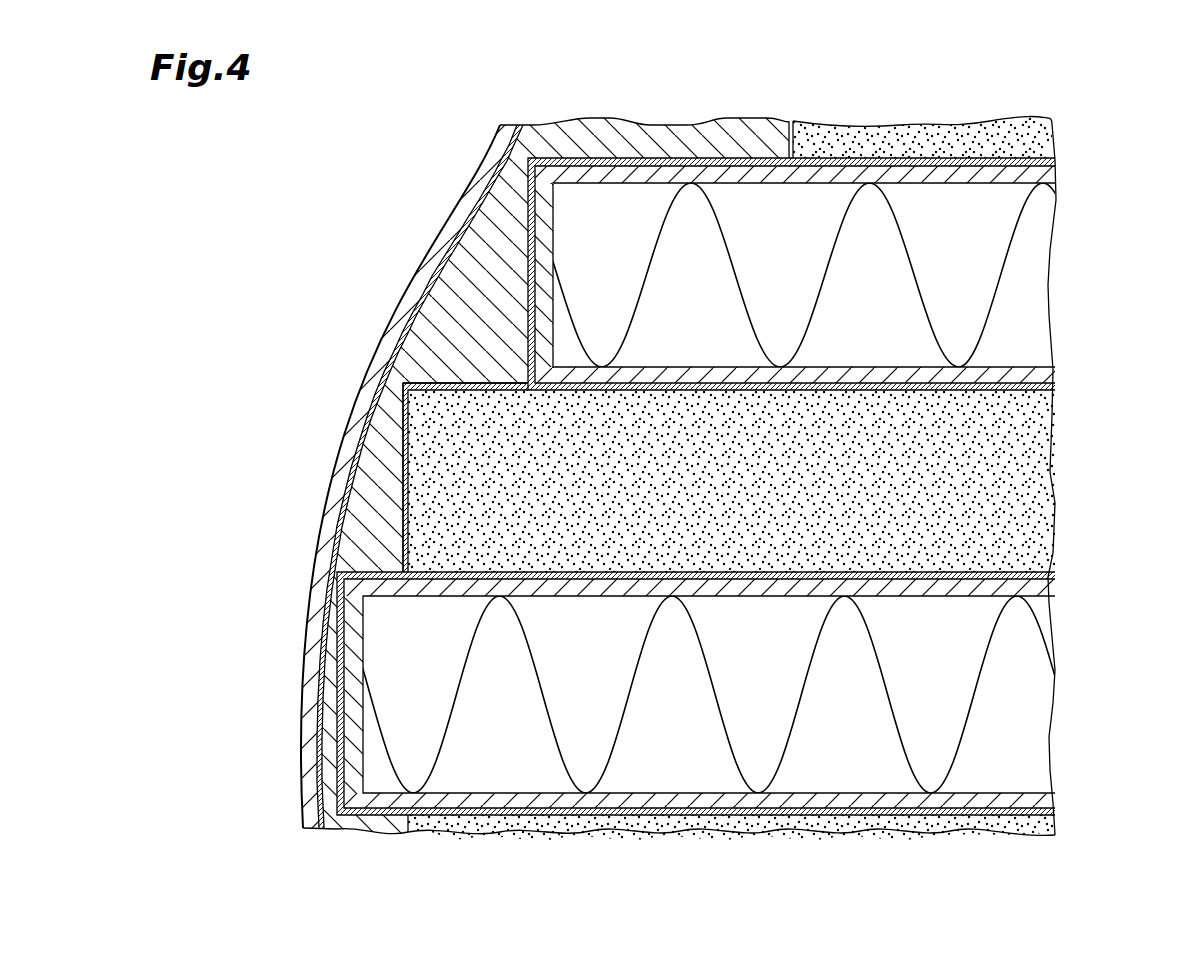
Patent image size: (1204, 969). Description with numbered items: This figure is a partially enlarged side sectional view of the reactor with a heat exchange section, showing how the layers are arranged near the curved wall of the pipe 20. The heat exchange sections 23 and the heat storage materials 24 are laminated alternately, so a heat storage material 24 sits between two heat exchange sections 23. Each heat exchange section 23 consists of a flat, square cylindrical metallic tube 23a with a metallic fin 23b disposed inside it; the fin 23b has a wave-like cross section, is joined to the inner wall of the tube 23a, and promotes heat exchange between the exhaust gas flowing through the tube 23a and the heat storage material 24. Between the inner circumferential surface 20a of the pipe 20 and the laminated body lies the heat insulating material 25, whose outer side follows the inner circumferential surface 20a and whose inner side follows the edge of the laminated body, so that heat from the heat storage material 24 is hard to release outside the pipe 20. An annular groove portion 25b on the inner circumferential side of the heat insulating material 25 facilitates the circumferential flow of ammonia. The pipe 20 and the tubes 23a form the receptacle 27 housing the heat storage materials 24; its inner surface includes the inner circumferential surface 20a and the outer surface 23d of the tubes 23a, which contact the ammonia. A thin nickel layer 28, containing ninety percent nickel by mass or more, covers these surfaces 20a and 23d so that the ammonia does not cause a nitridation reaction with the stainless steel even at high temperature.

The pipe 20 is at (428, 250).
The inner circumferential surface of the pipe 20a is at (464, 215).
The nickel layer 28 is at (421, 300).
The receptacle 27 is at (635, 476).
The heat insulating material 25 is at (363, 522).
The groove portion 25b is at (400, 480).
The heat storage material 24 is at (1013, 487).
The heat exchange section 23 is at (758, 483).
The tube 23a is at (1047, 178).
The fin 23b is at (1013, 257).
The outer surface of the tube 23d is at (1022, 162).